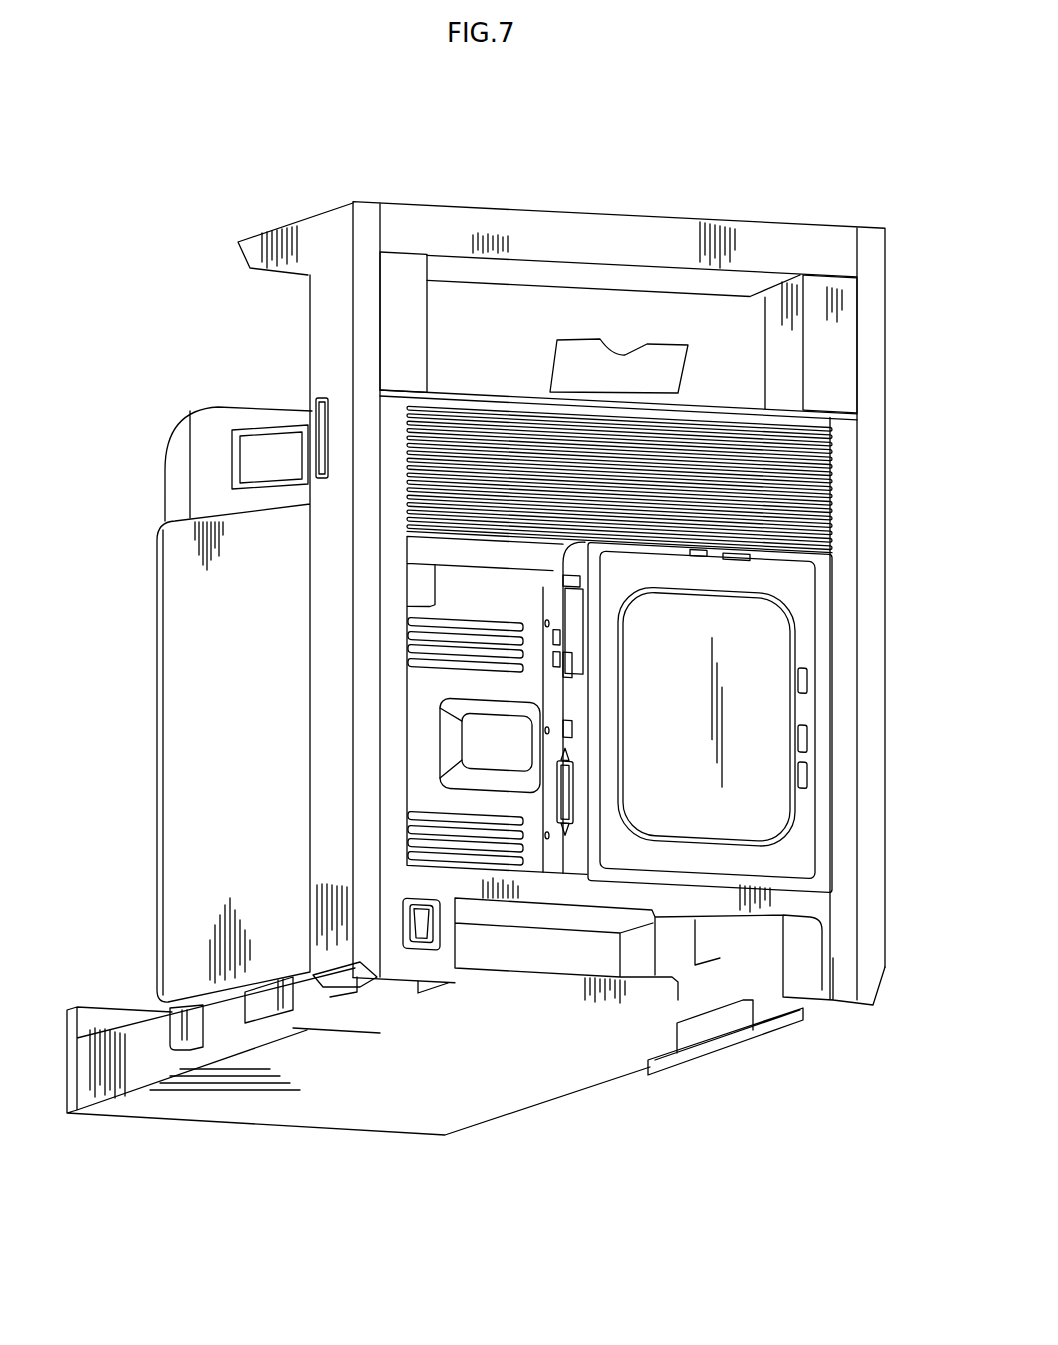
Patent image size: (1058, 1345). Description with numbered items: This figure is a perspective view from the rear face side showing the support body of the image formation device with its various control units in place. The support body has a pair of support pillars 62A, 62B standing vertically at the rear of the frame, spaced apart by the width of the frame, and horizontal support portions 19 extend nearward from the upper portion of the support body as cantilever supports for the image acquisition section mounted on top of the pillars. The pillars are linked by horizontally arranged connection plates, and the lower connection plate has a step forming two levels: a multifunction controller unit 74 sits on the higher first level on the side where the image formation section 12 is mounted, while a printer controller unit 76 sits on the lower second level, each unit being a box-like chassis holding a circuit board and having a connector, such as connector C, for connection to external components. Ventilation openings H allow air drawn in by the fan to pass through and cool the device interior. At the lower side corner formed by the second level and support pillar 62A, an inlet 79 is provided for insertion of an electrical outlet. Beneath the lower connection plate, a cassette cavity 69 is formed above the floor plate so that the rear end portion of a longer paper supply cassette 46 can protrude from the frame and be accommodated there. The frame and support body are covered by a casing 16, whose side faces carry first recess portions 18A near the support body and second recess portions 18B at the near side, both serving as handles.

The image formation section 12 is at (155, 474).
The casing 16 is at (175, 712).
The first recess portion 18A is at (303, 998).
The second recess portion 18B is at (215, 1027).
The horizontal support portion 19 is at (256, 252).
The paper supply cassette 46 is at (68, 1058).
The support pillar 62A is at (835, 352).
The support pillar 62B is at (403, 337).
The cassette cavity 69 is at (518, 995).
The multifunction controller unit 74 is at (553, 607).
The printer controller unit 76 is at (820, 616).
The inlet 79 is at (413, 952).
The connector C is at (553, 803).
The ventilation openings H is at (823, 421).